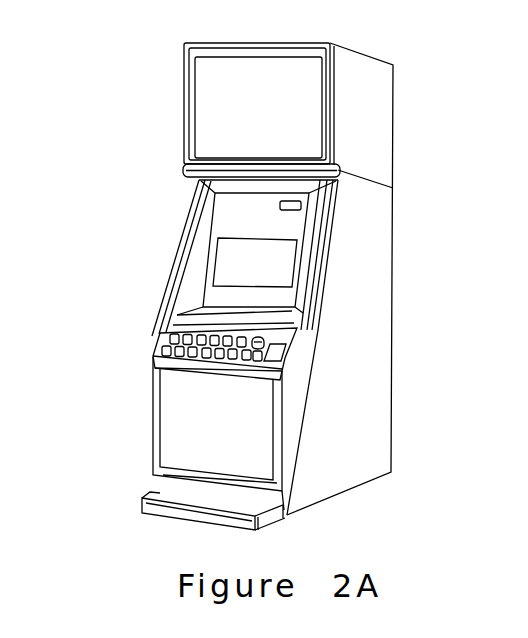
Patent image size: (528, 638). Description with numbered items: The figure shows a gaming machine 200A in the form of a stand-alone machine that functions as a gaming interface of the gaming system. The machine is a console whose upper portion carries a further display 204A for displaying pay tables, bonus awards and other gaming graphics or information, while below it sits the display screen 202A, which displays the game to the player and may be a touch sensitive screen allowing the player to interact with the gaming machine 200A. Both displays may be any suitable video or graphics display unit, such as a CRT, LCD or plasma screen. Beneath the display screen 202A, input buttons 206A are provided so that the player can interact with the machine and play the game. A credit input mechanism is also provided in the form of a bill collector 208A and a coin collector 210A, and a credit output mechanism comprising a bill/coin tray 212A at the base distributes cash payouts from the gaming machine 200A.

The gaming machine 200A is at (286, 286).
The display screen 202A is at (232, 262).
The further display 204A is at (212, 89).
The input buttons 206A is at (170, 345).
The bill collector 208A is at (287, 349).
The coin collector 210A is at (263, 333).
The bill/coin tray 212A is at (170, 490).